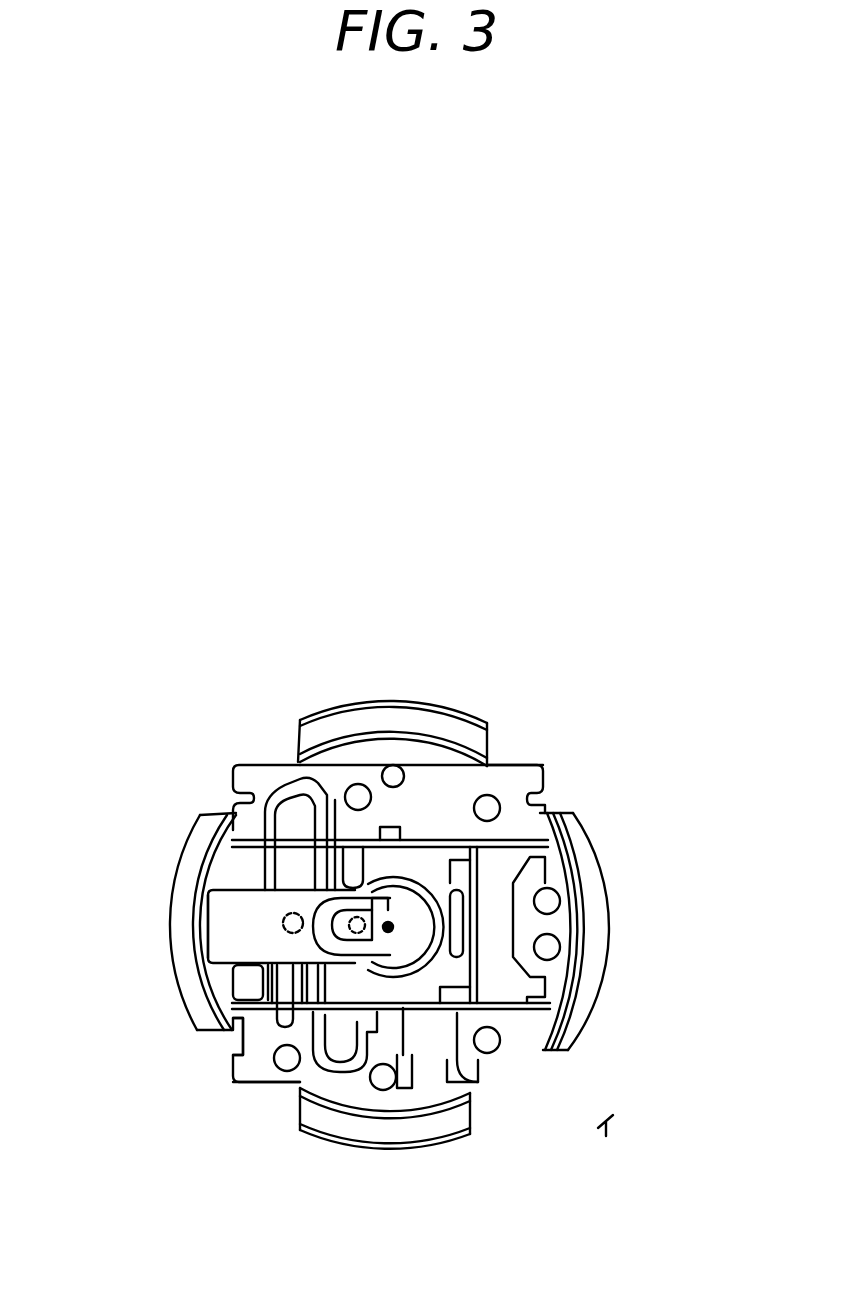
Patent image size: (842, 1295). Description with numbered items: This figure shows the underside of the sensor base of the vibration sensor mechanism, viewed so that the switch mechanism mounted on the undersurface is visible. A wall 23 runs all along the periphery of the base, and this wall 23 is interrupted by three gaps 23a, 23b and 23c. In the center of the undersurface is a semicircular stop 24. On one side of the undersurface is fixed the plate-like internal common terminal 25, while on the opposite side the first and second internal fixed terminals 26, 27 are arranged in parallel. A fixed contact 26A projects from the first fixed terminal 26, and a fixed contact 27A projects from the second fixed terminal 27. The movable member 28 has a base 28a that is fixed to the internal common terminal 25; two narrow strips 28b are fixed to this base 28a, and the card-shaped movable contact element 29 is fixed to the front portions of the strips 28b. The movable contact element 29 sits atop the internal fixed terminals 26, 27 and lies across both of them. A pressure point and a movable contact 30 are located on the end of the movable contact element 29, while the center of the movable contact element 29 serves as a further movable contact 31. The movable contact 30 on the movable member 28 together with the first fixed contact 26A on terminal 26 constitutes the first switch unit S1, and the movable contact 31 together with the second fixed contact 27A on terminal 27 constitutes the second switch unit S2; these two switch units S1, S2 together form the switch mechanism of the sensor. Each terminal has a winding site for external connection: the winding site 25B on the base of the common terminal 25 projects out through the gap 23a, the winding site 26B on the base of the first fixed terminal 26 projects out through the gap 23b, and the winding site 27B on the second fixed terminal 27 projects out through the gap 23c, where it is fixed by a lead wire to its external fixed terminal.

The wall 23 is at (417, 987).
The gap 23a is at (568, 813).
The gap 23b is at (273, 1113).
The gap 23c is at (212, 813).
The semicircular stop 24 is at (415, 905).
The internal common terminal 25 is at (473, 783).
The winding site 25B is at (548, 777).
The first internal fixed terminal 26 is at (227, 1085).
The fixed contact 26A is at (348, 928).
The winding site 26B is at (258, 1083).
The second internal fixed terminal 27 is at (307, 753).
The fixed contact 27A is at (283, 927).
The winding site 27B is at (235, 772).
The movable member 28 is at (198, 901).
The base of movable member 28a is at (560, 927).
The narrow strips 28b is at (440, 837).
The movable contact element 29 is at (262, 912).
The movable contact 30 is at (362, 945).
The movable contact 31 is at (285, 947).
The first switch unit S1 is at (388, 927).
The second switch unit S2 is at (265, 915).